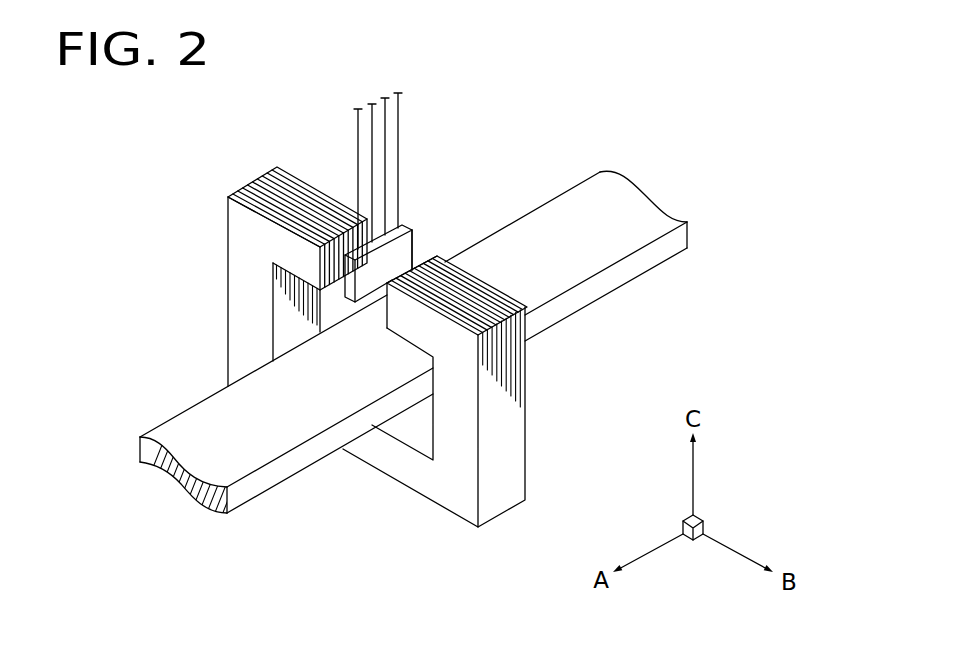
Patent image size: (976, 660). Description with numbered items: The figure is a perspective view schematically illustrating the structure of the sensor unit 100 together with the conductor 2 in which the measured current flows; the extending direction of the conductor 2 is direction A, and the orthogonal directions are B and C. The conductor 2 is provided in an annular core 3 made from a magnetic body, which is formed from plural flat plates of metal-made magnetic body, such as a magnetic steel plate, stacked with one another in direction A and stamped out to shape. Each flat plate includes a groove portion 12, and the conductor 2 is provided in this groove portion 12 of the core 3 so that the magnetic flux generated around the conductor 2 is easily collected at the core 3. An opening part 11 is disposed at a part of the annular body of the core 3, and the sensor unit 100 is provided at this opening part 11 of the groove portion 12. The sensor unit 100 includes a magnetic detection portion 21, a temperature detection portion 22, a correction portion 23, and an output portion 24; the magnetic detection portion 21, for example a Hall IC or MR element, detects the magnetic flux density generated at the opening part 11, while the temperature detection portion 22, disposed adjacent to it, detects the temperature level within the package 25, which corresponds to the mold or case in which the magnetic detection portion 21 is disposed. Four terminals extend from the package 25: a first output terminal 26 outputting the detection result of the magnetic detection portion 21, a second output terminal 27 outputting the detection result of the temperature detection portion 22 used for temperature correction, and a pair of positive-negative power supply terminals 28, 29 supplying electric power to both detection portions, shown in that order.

The conductor 2 is at (206, 422).
The core 3 is at (429, 375).
The opening part 11 is at (419, 254).
The groove portion 12 is at (420, 429).
The magnetic detection portion 21 is at (297, 207).
The temperature detection portion 22 is at (274, 291).
The correction portion 23 is at (343, 275).
The output portion 24 is at (297, 295).
The sensor unit 100 is at (234, 257).
The package 25 is at (368, 283).
The first output terminal 26 is at (358, 142).
The second output terminal 27 is at (372, 123).
The power supply terminal 28 is at (385, 145).
The power supply terminal 29 is at (398, 172).